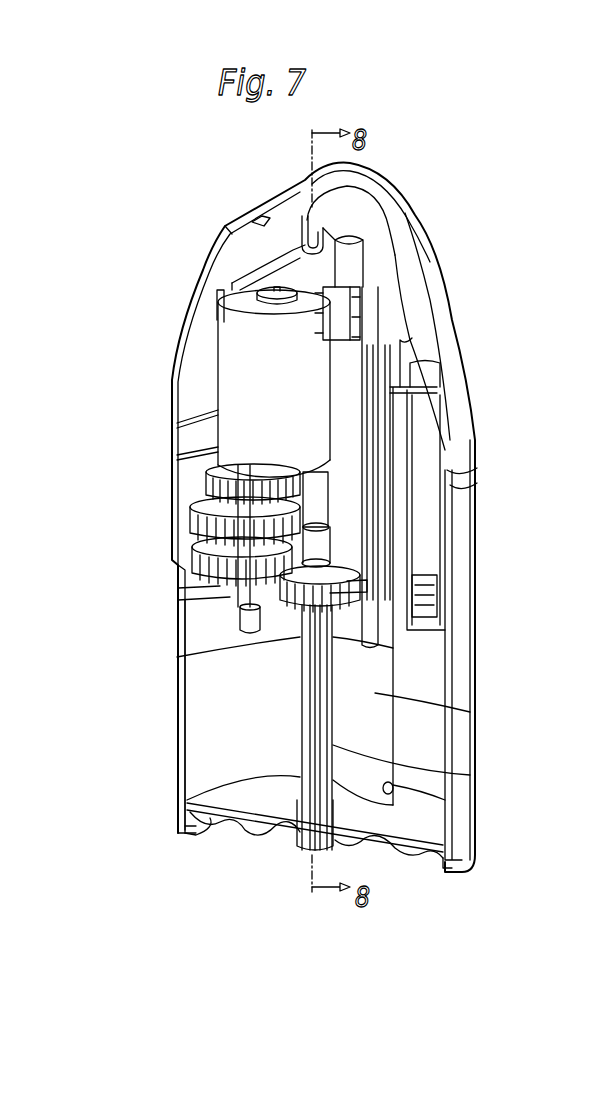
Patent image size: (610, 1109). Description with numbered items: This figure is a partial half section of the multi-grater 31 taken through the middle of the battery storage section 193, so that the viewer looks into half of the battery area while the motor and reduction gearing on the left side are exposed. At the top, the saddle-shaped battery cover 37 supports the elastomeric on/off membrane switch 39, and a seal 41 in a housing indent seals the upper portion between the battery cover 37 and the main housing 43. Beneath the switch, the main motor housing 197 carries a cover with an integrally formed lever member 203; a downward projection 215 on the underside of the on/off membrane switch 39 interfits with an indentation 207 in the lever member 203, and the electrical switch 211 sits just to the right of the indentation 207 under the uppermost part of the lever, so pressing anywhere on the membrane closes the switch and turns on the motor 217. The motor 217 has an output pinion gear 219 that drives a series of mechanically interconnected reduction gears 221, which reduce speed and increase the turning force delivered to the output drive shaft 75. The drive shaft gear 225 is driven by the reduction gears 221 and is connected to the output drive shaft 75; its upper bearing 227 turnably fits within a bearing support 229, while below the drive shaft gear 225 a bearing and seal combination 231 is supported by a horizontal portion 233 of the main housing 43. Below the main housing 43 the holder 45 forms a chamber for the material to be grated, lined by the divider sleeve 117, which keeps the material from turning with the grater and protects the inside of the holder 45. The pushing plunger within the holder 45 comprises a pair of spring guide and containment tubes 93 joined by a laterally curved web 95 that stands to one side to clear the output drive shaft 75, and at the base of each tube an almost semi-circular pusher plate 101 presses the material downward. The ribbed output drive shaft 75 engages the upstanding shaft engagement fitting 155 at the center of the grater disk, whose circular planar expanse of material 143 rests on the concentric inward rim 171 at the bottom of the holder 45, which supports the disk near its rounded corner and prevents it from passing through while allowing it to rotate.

The multi-grater 31 is at (139, 186).
The on/off membrane switch 39 is at (353, 203).
The integrally formed lever member 203 is at (257, 257).
The indentation 207 is at (258, 217).
The downward projection 215 is at (310, 240).
The motor 217 is at (230, 340).
The main motor housing 197 is at (375, 312).
The bearing support 229 is at (347, 457).
The electrical switch 211 is at (395, 285).
The battery cover 37 is at (412, 337).
The output pinion gear 219 is at (390, 357).
The seal 41 is at (475, 463).
The battery storage section 193 is at (427, 513).
The web 95 is at (365, 578).
The upper bearing 227 is at (333, 545).
The series of mechanically interconnected reduction gears 221 is at (197, 553).
The drive shaft gear 225 is at (217, 583).
The horizontal portion 233 is at (260, 623).
The bearing and seal combination 231 is at (300, 638).
The main housing 43 is at (172, 463).
The holder 45 is at (178, 693).
The divider sleeve 117 is at (220, 732).
The spring guide and containment tubes 93 is at (375, 693).
The output drive shaft 75 is at (320, 723).
The almost semi-circular pusher plate 101 is at (407, 807).
The upstanding shaft engagement fitting 155 is at (297, 840).
The circular planar expanse of material 143 is at (382, 853).
The inward rim 171 is at (430, 868).